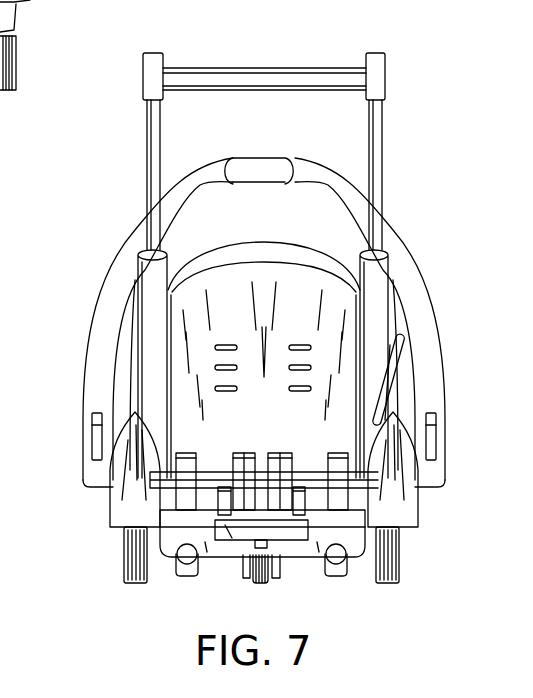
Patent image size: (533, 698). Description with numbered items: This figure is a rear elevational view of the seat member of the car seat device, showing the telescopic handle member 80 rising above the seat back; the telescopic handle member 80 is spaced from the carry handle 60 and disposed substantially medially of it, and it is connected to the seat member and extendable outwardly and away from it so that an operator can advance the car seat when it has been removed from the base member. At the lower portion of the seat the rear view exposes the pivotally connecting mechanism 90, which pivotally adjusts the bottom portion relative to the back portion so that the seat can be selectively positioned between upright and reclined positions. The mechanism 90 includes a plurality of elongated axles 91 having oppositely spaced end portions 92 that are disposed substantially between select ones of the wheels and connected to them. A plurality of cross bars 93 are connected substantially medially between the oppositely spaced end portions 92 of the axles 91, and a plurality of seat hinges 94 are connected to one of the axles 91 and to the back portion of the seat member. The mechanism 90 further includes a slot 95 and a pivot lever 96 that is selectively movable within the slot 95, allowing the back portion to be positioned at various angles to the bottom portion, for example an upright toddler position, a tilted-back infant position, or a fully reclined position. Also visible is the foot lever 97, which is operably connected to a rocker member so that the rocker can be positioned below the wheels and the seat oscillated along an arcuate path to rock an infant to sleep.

The carry handle 60 is at (6, 92).
The telescopic handle member 80 is at (258, 68).
The pivotally connecting mechanism 90 is at (358, 483).
The elongated axle 91 is at (322, 535).
The end portion 92 is at (167, 502).
The cross bar 93 is at (190, 563).
The seat hinge 94 is at (188, 475).
The slot 95 is at (370, 465).
The pivot lever 96 is at (395, 368).
The foot lever 97 is at (238, 533).